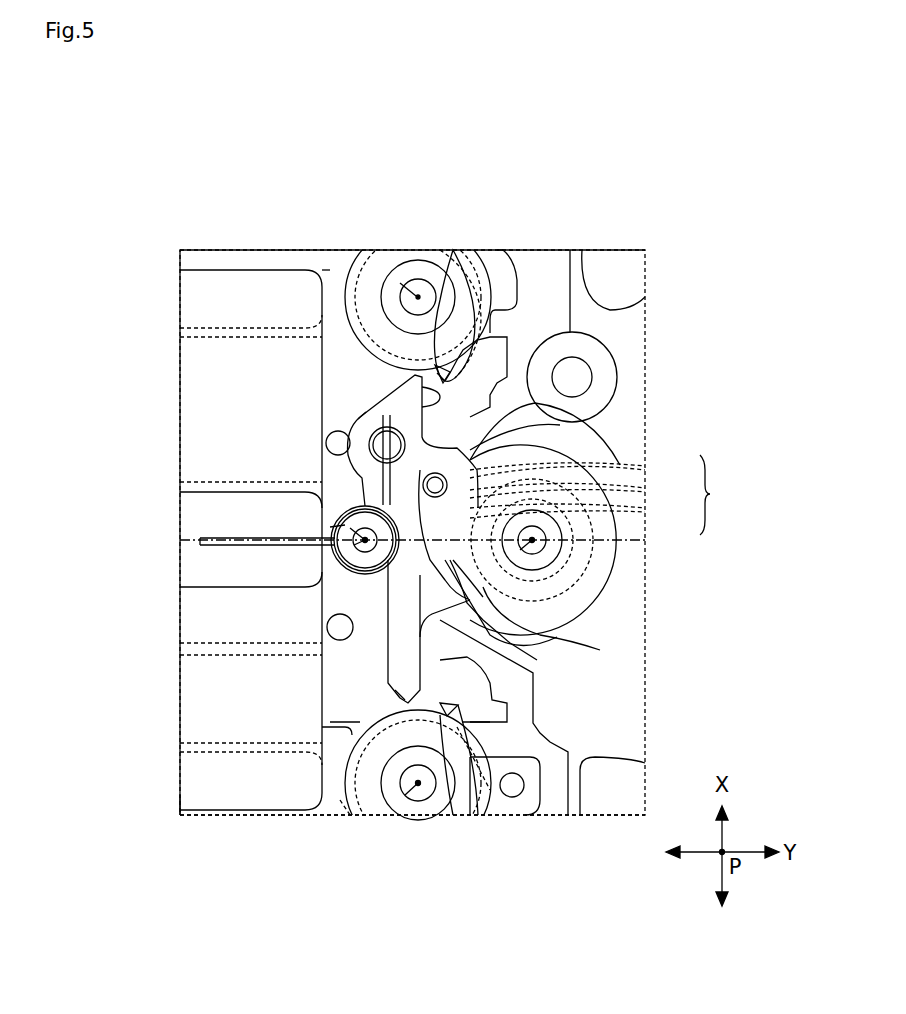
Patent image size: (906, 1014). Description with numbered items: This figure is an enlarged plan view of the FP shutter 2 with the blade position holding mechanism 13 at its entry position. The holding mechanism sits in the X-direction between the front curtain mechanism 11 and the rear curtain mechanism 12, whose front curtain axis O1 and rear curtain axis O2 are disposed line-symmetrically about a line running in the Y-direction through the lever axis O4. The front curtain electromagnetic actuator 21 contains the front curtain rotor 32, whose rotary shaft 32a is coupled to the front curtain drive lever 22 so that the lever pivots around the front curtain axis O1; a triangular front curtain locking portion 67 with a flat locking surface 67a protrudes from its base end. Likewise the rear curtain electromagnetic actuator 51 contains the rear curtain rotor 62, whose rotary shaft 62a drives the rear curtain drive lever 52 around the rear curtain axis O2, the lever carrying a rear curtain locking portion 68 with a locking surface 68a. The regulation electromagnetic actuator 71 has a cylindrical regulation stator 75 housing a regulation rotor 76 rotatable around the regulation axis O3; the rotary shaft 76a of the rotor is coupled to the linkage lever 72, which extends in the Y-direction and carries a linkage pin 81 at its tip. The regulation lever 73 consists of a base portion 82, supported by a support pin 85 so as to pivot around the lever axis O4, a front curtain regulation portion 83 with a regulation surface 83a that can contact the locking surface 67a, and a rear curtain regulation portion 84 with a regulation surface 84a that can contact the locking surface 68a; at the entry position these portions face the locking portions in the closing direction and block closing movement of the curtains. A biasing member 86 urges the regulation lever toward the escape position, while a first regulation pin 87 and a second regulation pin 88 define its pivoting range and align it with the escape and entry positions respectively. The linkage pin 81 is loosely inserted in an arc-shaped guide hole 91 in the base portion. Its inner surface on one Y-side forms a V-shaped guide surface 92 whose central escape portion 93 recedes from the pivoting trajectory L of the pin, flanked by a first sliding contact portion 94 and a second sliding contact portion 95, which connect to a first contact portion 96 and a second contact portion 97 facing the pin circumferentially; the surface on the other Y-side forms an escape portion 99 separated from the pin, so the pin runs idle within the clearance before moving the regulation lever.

The FP shutter 2 is at (318, 198).
The front curtain mechanism 11 is at (243, 812).
The rear curtain mechanism 12 is at (240, 246).
The blade position holding mechanism 13 is at (595, 455).
The front curtain electromagnetic actuator 21 is at (183, 812).
The front curtain drive lever 22 is at (545, 785).
The front curtain rotor 32 is at (358, 798).
The rotary shaft 32a is at (442, 800).
The rear curtain electromagnetic actuator 51 is at (178, 303).
The rear curtain drive lever 52 is at (520, 270).
The rear curtain rotor 62 is at (347, 285).
The rotary shaft 62a is at (398, 283).
The front curtain locking portion 67 is at (478, 780).
The locking surface 67a is at (448, 715).
The rear curtain locking portion 68 is at (460, 332).
The locking surface 68a is at (443, 372).
The regulation electromagnetic actuator 71 is at (600, 615).
The linkage lever 72 is at (590, 600).
The regulation lever 73 is at (386, 420).
The regulation stator 75 is at (557, 637).
The regulation rotor 76 is at (600, 575).
The rotary shaft 76a is at (545, 580).
The linkage pin 81 is at (350, 492).
The base portion 82 is at (365, 572).
The front curtain regulation portion 83 is at (395, 668).
The regulation surface 83a is at (400, 699).
The rear curtain regulation portion 84 is at (383, 440).
The regulation surface 84a is at (355, 411).
The support pin 85 is at (300, 546).
The biasing member 86 is at (330, 528).
The first regulation pin 87 is at (328, 627).
The second regulation pin 88 is at (338, 443).
The guide hole 91 is at (560, 425).
The guide surface 92 is at (605, 495).
The escape portion 93 is at (560, 490).
The first sliding contact portion 94 is at (560, 510).
The second sliding contact portion 95 is at (560, 470).
The first contact portion 96 is at (537, 660).
The second contact portion 97 is at (443, 477).
The escape portion 99 is at (580, 640).
The pivoting trajectory L is at (340, 503).
The front curtain axis O1 is at (418, 783).
The rear curtain axis O2 is at (418, 297).
The regulation axis O3 is at (532, 540).
The lever axis O4 is at (355, 540).